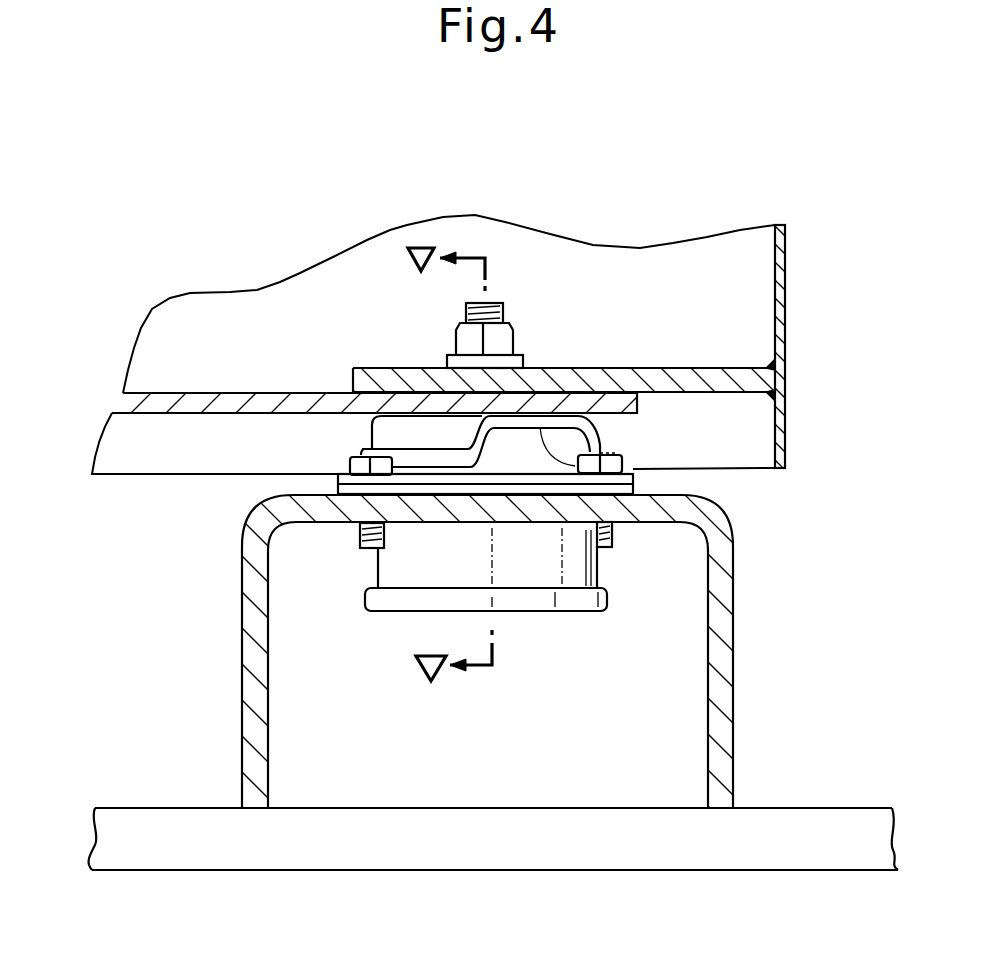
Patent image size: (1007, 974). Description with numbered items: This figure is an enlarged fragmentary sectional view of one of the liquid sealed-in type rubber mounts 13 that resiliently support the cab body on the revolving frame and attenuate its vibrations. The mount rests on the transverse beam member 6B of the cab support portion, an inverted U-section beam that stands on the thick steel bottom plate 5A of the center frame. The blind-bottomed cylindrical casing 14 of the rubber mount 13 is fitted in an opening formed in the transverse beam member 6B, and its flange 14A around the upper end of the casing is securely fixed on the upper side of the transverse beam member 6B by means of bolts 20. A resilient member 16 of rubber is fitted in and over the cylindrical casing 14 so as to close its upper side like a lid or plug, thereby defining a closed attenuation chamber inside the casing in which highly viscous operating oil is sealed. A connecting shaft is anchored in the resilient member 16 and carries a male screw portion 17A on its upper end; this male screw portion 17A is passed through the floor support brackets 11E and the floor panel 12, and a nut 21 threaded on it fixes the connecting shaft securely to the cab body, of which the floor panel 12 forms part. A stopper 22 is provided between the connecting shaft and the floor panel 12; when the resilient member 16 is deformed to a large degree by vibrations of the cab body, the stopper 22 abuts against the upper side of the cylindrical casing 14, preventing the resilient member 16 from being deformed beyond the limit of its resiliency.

The bottom plate 5A is at (390, 847).
The transverse beam member 6B is at (722, 710).
The floor support bracket 11E is at (693, 372).
The floor panel 12 is at (188, 400).
The rubber mount 13 is at (597, 570).
The cylindrical casing 14 is at (398, 559).
The flange 14A is at (336, 483).
The resilient member 16 is at (533, 452).
The male screw portion 17A is at (498, 303).
The bolt 20 is at (350, 458).
The nut 21 is at (460, 340).
The stopper 22 is at (398, 428).